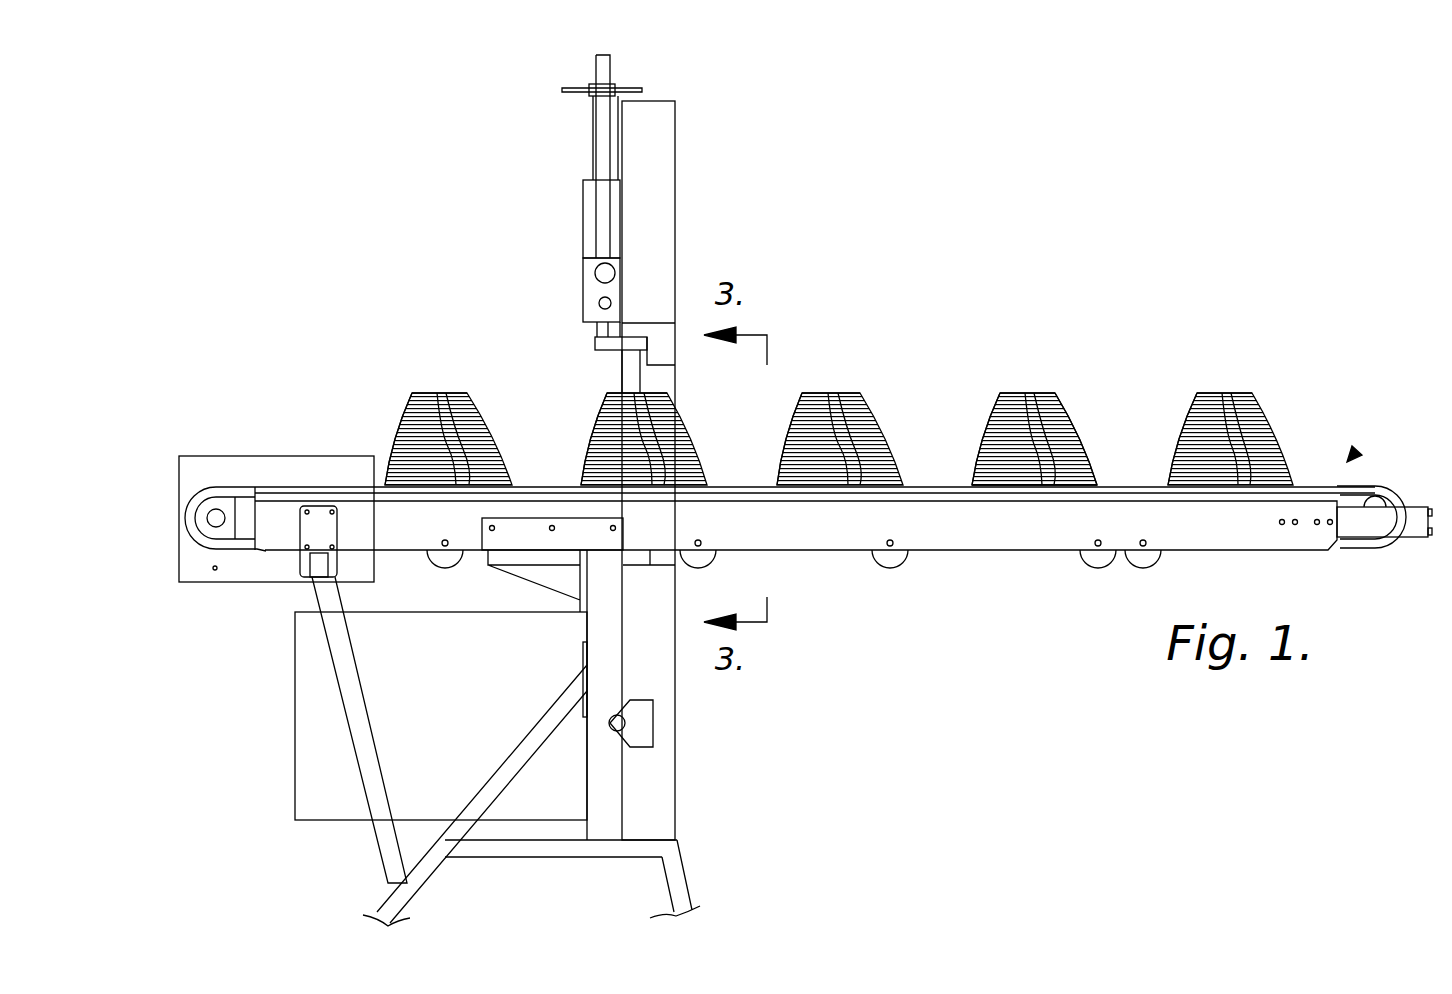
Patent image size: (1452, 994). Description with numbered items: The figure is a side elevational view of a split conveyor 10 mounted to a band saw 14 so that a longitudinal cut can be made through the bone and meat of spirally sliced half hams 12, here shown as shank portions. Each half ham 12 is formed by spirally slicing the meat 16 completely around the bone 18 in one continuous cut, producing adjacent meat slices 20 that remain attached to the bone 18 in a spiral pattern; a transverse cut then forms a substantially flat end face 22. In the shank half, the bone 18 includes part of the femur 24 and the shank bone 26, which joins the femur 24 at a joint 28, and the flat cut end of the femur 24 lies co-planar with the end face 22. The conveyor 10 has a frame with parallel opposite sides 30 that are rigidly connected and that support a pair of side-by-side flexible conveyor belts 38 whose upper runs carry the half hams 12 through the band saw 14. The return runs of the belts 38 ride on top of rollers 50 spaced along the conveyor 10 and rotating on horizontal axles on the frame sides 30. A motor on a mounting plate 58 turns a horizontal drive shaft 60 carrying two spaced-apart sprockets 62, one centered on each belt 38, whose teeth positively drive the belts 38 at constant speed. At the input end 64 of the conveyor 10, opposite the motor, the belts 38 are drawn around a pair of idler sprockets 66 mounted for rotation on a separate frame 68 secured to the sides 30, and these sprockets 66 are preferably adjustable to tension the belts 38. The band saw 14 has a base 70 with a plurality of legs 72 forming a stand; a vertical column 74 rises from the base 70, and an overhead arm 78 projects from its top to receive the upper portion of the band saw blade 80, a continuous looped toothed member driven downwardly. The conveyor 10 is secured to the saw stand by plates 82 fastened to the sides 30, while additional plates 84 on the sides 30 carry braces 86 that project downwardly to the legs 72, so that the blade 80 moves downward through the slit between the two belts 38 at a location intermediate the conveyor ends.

The split conveyor 10 is at (1300, 558).
The spirally sliced half ham 12 is at (478, 416).
The band saw 14 is at (688, 226).
The meat 16 is at (428, 408).
The bone 18 is at (447, 405).
The meat slices 20 is at (413, 446).
The end face 22 is at (992, 489).
The femur 24 is at (1050, 489).
The shank bone 26 is at (1040, 394).
The joint 28 is at (1052, 466).
The conveyor frame sides 30 is at (830, 549).
The conveyor belts 38 is at (1366, 485).
The rollers 50 is at (445, 558).
The mounting plate 58 is at (280, 456).
The drive shaft 60 is at (217, 520).
The sprockets 62 is at (200, 538).
The input end 64 is at (1352, 455).
The idler sprockets 66 is at (1400, 496).
The separate frame 68 is at (1390, 526).
The base 70 is at (542, 852).
The legs 72 is at (425, 875).
The vertical column 74 is at (665, 678).
The overhead arm 78 is at (660, 154).
The band saw blade 80 is at (655, 362).
The plates 82 is at (535, 541).
The plates 84 is at (332, 527).
The braces 86 is at (355, 713).